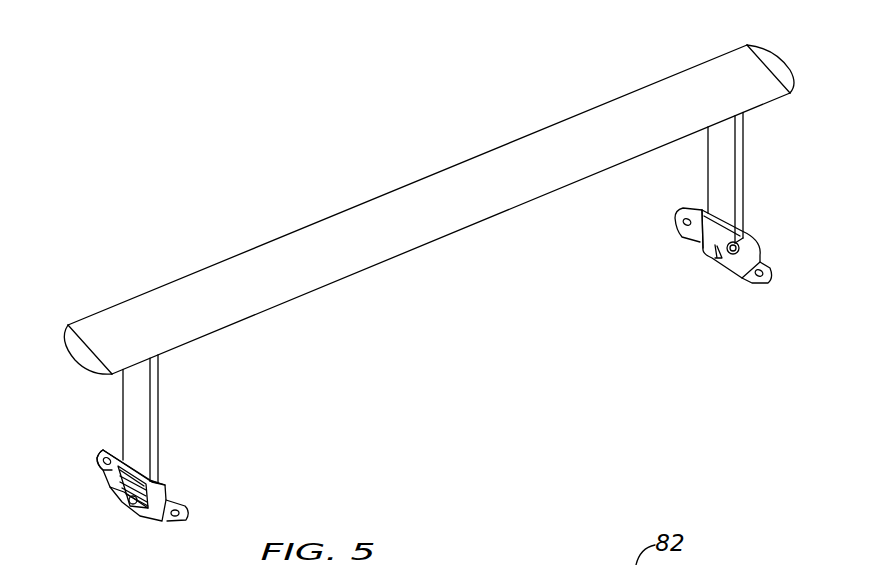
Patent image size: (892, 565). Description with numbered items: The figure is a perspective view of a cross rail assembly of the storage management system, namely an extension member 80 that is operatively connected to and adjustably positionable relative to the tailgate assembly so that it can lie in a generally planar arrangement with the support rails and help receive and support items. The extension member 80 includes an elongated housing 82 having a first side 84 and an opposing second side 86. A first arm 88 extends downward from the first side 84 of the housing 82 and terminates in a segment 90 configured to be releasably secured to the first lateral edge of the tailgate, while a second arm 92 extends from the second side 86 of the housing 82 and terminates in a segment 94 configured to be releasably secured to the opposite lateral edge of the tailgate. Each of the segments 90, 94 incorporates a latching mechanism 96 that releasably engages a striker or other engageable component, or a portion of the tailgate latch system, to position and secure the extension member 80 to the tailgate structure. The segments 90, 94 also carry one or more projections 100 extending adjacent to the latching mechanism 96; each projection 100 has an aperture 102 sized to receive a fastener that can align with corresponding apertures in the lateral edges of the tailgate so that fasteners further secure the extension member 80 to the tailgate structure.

The extension member 80 is at (240, 198).
The housing 82 is at (405, 175).
The first side 84 is at (80, 350).
The second side 86 is at (770, 58).
The first arm 88 is at (160, 395).
The segment 90 is at (165, 480).
The second arm 92 is at (743, 155).
The segment 94 is at (708, 213).
The latching mechanism 96 is at (715, 283).
The projection 100 is at (100, 466).
The aperture 102 is at (760, 268).